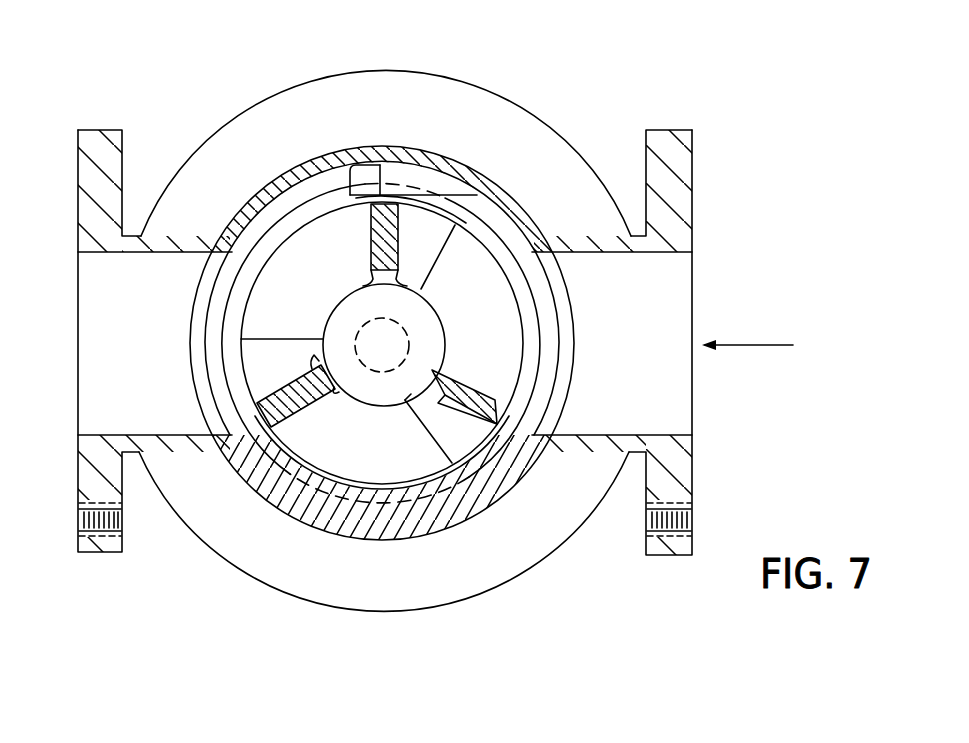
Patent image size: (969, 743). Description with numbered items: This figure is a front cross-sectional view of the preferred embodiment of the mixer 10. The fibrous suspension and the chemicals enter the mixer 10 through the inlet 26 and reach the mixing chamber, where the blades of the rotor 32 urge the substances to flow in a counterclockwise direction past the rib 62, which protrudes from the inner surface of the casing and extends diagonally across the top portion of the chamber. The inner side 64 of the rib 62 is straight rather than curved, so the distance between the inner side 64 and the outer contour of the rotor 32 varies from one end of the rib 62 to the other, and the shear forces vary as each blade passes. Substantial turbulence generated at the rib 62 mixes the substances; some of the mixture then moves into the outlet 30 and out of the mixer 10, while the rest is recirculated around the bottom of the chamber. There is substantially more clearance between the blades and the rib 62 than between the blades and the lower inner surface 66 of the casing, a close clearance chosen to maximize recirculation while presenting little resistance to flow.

The mixer 10 is at (633, 48).
The inlet 26 is at (643, 370).
The outlet 30 is at (110, 373).
The rotor 32 is at (458, 440).
The rib 62 is at (361, 190).
The inner side of rib 64 is at (350, 198).
The lower inner surface of casing 66 is at (292, 478).